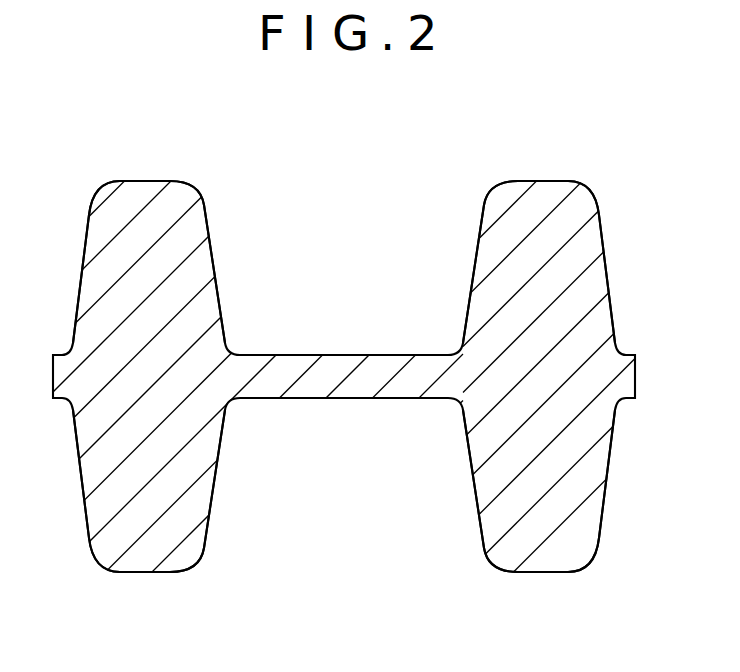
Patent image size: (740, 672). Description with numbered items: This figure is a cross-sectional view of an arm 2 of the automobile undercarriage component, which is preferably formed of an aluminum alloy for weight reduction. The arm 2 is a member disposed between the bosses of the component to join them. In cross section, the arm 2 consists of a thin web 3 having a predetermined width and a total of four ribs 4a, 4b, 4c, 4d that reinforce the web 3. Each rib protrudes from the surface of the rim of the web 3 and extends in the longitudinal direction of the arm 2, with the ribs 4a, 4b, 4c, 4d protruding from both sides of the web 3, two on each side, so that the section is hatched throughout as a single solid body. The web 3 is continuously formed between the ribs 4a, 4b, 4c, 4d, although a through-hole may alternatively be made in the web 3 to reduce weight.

The arm 2 is at (490, 135).
The web 3 is at (342, 408).
The rib 4a is at (162, 172).
The rib 4b is at (158, 583).
The rib 4c is at (557, 172).
The rib 4d is at (553, 583).